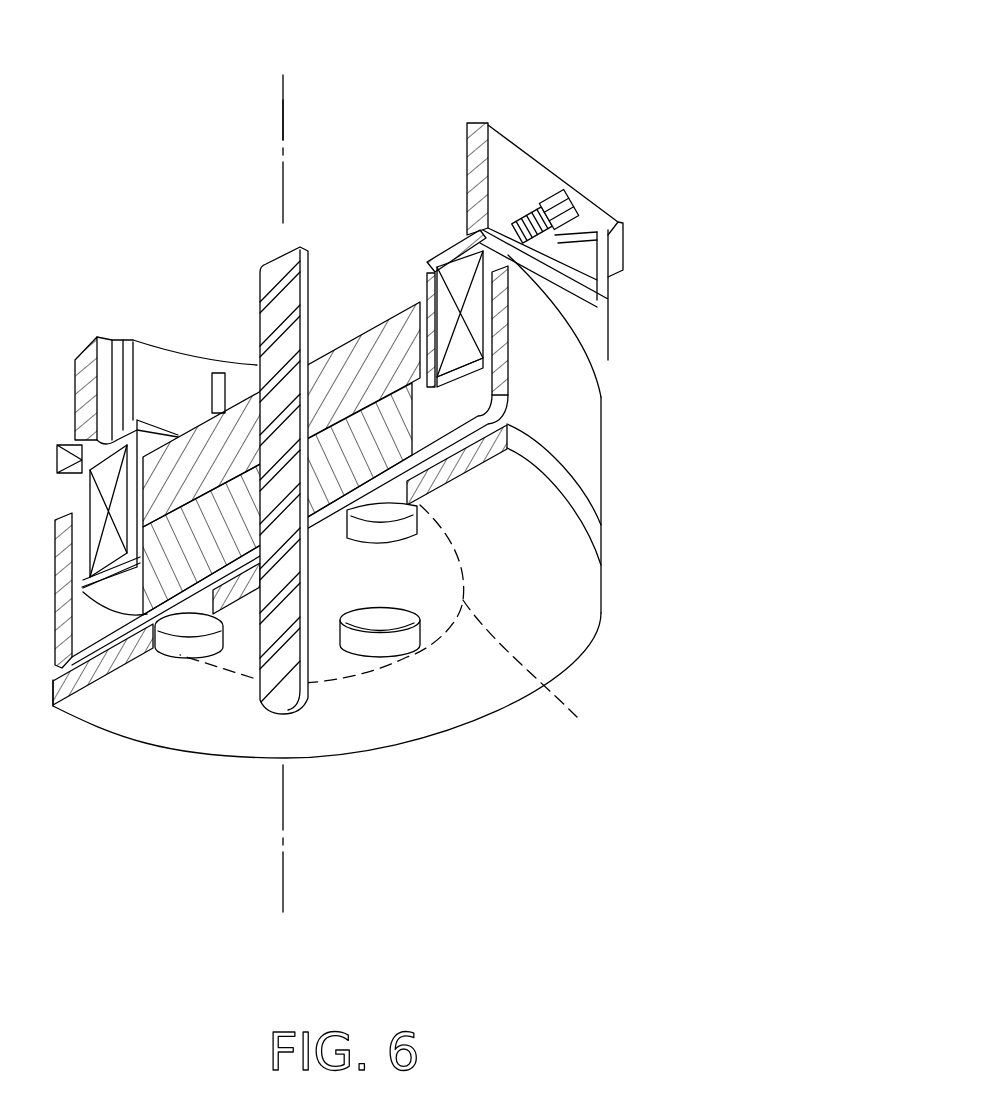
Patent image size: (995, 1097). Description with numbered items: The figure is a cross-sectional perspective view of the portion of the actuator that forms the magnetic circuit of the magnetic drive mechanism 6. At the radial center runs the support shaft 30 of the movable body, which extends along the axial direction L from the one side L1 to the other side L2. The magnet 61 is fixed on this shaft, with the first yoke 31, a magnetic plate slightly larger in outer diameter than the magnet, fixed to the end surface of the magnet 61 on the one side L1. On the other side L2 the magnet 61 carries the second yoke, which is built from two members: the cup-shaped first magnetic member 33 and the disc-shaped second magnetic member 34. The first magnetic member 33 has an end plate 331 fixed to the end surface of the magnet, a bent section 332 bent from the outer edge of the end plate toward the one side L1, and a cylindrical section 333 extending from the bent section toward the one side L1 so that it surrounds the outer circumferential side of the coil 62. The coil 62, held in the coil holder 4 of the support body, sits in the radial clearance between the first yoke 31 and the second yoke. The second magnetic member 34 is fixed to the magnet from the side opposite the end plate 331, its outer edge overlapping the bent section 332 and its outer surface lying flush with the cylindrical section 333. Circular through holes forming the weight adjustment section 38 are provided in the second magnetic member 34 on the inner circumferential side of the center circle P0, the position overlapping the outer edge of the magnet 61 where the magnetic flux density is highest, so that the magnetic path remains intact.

The coil holder 4 is at (518, 158).
The magnetic drive mechanism 6 is at (681, 270).
The support shaft 30 is at (312, 272).
The first yoke 31 is at (383, 316).
The first magnetic member 33 is at (703, 377).
The end plate 331 is at (525, 492).
The bent section 332 is at (568, 457).
The cylindrical section 333 is at (587, 408).
The second magnetic member 34 is at (595, 592).
The weight adjustment section 38 is at (180, 653).
The magnet 61 is at (472, 405).
The coil 62 is at (467, 316).
The axial direction L is at (281, 121).
The one side in the axial direction L1 is at (280, 131).
The other side in the axial direction L2 is at (280, 855).
The center circle P0 is at (388, 628).